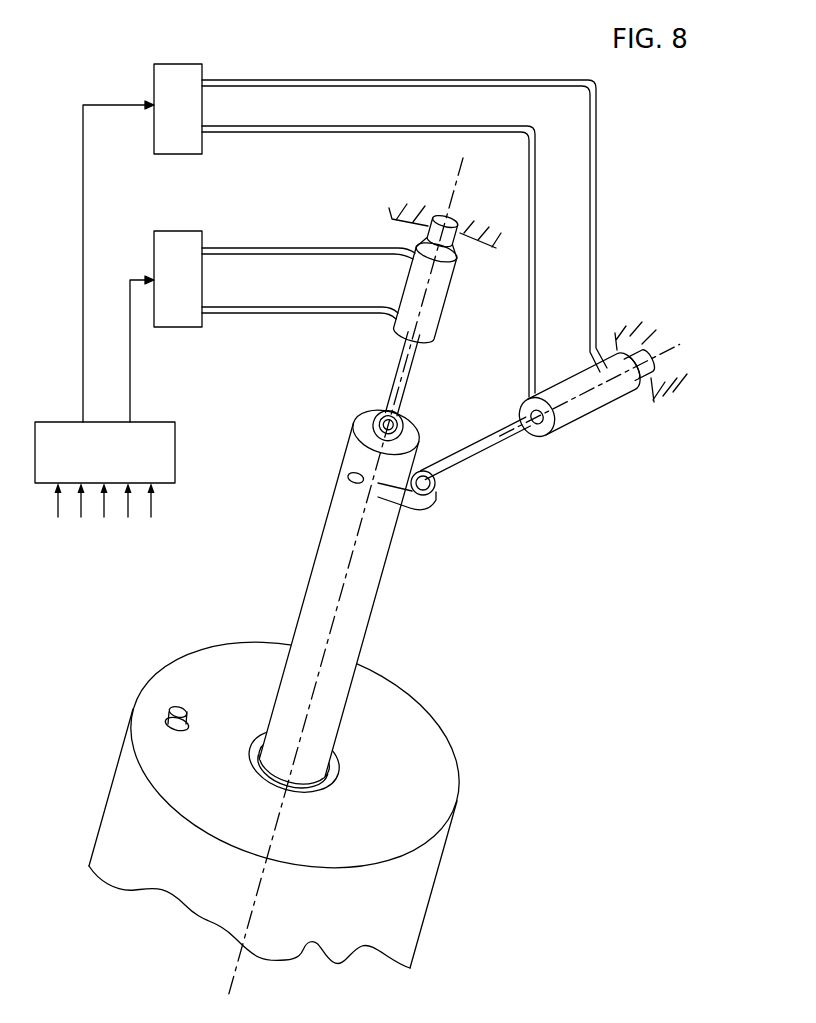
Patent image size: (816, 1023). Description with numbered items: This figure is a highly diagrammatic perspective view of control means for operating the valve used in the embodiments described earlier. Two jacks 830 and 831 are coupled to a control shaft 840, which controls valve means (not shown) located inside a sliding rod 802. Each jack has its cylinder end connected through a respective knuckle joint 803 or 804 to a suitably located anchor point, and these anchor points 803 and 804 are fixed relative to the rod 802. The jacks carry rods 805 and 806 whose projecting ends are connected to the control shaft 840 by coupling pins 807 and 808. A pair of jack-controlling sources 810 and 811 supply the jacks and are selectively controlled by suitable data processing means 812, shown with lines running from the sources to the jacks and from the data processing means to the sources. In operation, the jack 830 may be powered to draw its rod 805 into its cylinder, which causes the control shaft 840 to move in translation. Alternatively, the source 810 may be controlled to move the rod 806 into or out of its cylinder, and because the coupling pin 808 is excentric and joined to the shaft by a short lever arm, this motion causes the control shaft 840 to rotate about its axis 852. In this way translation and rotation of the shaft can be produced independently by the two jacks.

The sliding rod 802 is at (430, 809).
The knuckle joint 803 is at (432, 216).
The knuckle joint 804 is at (644, 353).
The rod 805 is at (407, 378).
The rod 806 is at (490, 453).
The coupling pin 807 is at (360, 421).
The excentric coupling pin 808 is at (428, 512).
The jack-controlling source 810 is at (160, 82).
The jack-controlling source 811 is at (164, 249).
The data processing means 812 is at (163, 460).
The jack 830 is at (433, 297).
The jack 831 is at (592, 406).
The control shaft 840 is at (370, 655).
The axis 852 is at (340, 594).